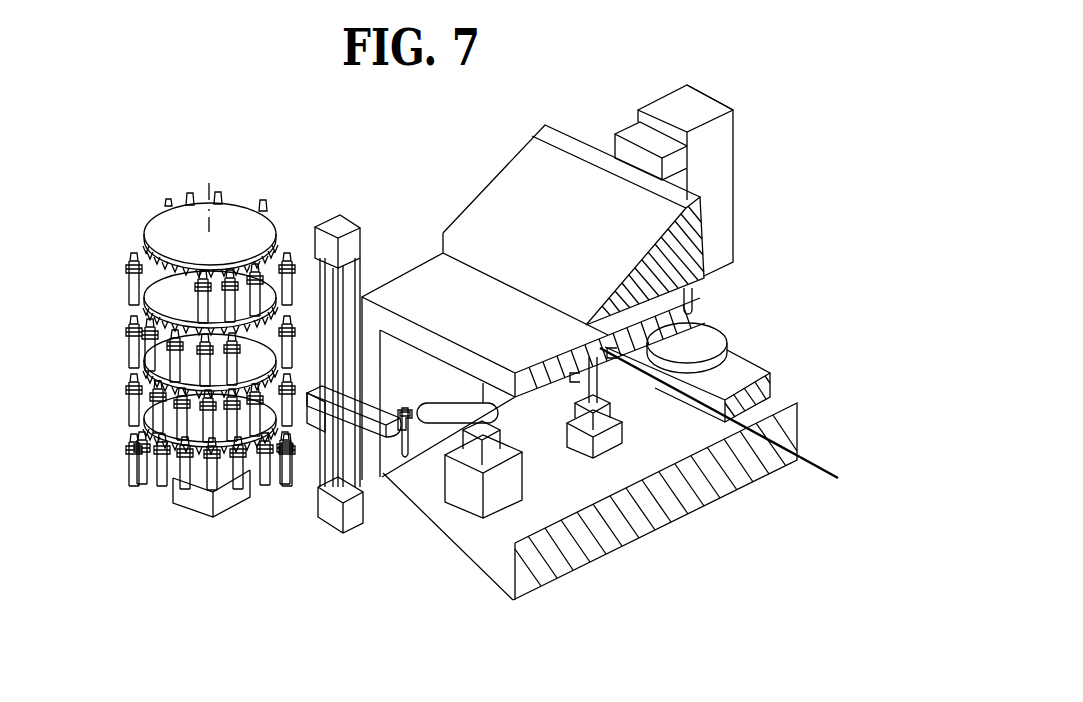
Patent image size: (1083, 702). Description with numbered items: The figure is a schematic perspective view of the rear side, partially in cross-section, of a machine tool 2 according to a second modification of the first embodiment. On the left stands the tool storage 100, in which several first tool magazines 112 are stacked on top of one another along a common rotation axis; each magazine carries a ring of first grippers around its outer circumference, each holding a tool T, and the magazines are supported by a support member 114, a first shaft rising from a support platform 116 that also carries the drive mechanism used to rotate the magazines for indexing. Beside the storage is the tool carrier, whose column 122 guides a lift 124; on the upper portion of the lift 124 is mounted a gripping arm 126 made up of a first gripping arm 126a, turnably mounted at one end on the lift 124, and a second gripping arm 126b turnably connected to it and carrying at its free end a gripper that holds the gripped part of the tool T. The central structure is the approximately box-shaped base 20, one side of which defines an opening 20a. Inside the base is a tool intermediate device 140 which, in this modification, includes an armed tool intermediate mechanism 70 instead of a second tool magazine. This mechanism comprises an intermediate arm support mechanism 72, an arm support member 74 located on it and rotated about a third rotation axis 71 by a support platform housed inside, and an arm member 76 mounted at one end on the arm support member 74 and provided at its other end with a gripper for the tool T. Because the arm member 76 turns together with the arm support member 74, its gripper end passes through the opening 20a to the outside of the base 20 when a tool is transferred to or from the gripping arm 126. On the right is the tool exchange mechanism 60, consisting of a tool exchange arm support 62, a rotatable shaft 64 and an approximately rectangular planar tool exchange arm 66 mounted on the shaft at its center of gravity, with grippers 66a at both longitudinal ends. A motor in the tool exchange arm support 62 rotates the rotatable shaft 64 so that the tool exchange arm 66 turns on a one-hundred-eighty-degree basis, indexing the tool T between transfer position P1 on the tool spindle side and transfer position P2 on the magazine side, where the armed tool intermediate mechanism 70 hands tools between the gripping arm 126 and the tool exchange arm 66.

The machine tool 2 is at (740, 78).
The base 20 is at (413, 292).
The opening 20a is at (428, 370).
The tool exchange mechanism 60 is at (640, 598).
The tool exchange arm support 62 is at (585, 440).
The rotatable shaft 64 is at (648, 387).
The tool exchange arm 66 is at (600, 385).
The grippers 66a is at (830, 475).
The armed tool intermediate mechanism 70 is at (417, 624).
The third rotation axis 71 is at (485, 393).
The intermediate arm support mechanism 72 is at (470, 497).
The arm support member 74 is at (503, 507).
The arm member 76 is at (443, 417).
The tool storage 100 is at (207, 153).
The first tool magazine 112 is at (170, 230).
The support member 114 is at (211, 394).
The support platform 116 is at (190, 497).
The lift column 122 is at (340, 230).
The lift 124 is at (302, 432).
The gripping arm 126 is at (307, 578).
The first gripping arm 126a is at (362, 475).
The second gripping arm 126b is at (398, 432).
The tool intermediate device 140 is at (536, 533).
The transfer position P1 is at (608, 335).
The transfer position P2 is at (552, 366).
The tool T is at (160, 360).